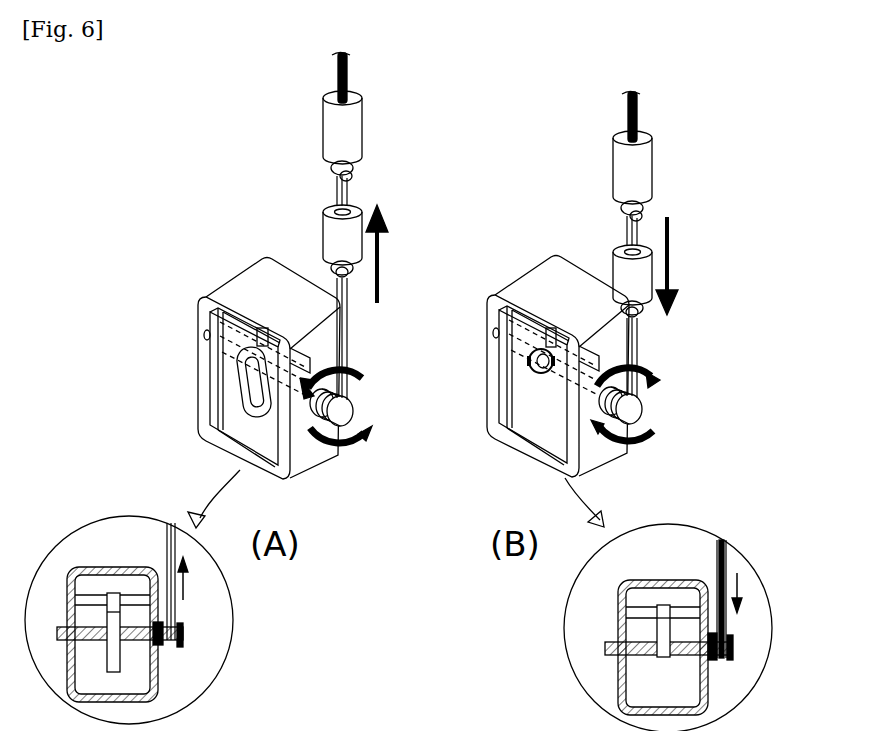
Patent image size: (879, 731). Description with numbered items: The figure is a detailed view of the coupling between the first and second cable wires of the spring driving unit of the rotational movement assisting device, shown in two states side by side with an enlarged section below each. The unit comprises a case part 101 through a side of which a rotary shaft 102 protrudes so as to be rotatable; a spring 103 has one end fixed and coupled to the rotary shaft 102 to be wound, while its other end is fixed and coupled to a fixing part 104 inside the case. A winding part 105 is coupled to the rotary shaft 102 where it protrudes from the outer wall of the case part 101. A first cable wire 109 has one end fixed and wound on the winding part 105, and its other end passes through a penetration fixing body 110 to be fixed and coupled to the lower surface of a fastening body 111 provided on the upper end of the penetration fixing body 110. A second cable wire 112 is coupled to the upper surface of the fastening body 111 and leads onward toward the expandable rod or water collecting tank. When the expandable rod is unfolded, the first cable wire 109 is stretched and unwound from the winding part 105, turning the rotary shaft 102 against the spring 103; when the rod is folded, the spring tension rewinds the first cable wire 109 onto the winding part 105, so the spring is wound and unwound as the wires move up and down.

The case part 101 is at (237, 277).
The rotary shaft 102 is at (233, 346).
The spring 103 is at (533, 361).
The fixing part 104 is at (522, 316).
The winding part 105 is at (345, 412).
The first cable wire 109 is at (723, 550).
The penetration fixing body 110 is at (643, 316).
The fastening body 111 is at (635, 174).
The second cable wire 112 is at (348, 68).